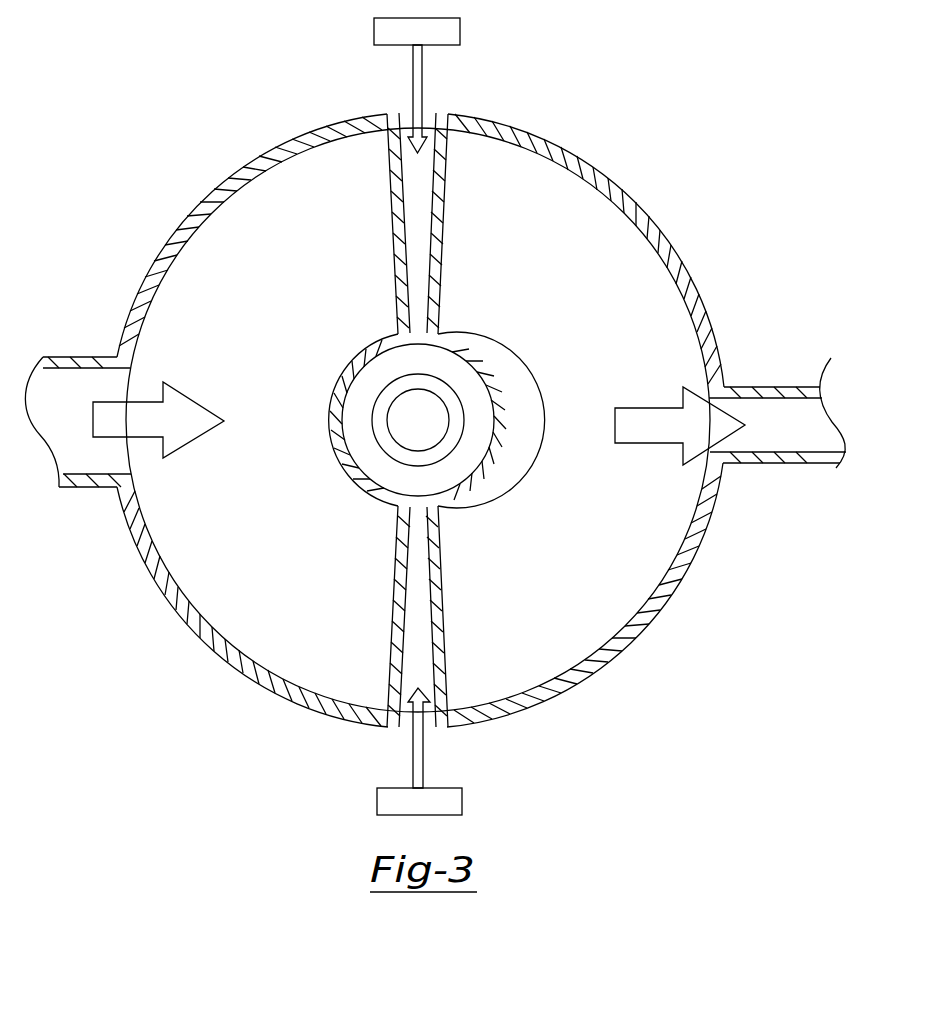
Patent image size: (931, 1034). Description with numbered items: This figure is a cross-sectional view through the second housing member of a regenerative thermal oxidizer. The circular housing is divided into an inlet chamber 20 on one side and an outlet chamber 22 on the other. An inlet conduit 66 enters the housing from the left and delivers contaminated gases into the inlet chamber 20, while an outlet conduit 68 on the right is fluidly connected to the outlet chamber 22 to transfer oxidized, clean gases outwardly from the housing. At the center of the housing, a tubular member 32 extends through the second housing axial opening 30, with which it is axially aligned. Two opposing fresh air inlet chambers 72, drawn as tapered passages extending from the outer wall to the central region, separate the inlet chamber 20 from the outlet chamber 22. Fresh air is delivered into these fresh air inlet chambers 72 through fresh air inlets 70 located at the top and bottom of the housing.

The inlet chamber 20 is at (292, 426).
The outlet chamber 22 is at (572, 436).
The second housing axial opening 30 is at (421, 428).
The tubular member 32 is at (447, 380).
The inlet conduit 66 is at (83, 357).
The outlet conduit 68 is at (790, 387).
The fresh air inlet 70 is at (423, 80).
The fresh air inlet chamber 72 is at (420, 232).